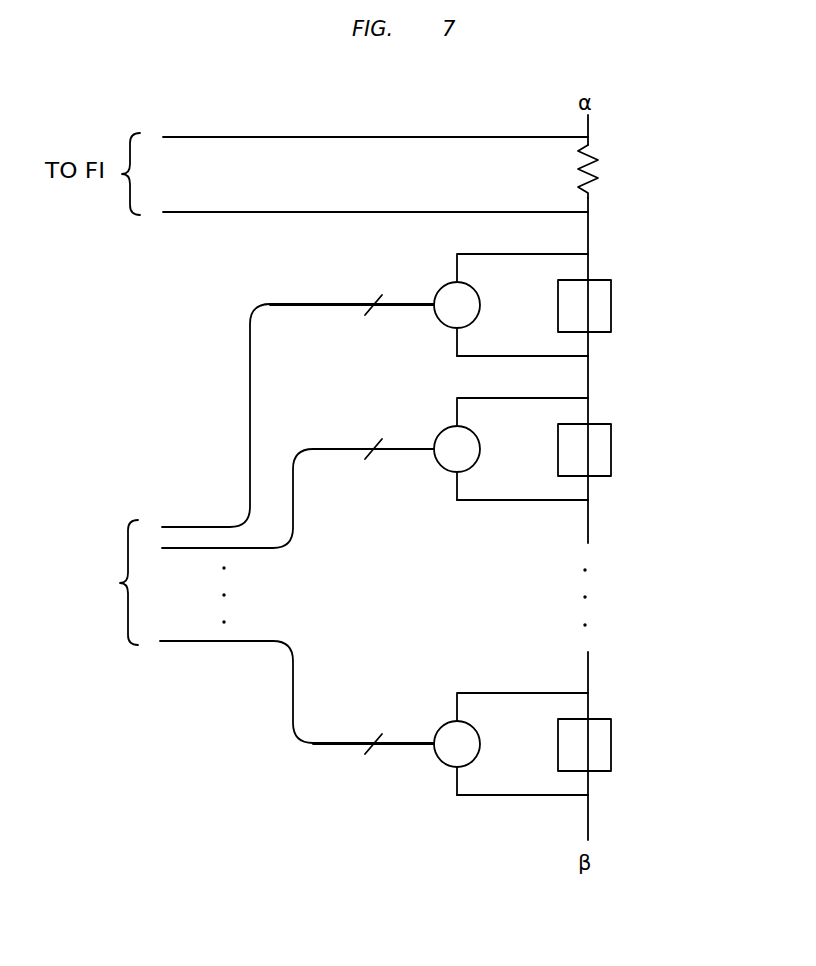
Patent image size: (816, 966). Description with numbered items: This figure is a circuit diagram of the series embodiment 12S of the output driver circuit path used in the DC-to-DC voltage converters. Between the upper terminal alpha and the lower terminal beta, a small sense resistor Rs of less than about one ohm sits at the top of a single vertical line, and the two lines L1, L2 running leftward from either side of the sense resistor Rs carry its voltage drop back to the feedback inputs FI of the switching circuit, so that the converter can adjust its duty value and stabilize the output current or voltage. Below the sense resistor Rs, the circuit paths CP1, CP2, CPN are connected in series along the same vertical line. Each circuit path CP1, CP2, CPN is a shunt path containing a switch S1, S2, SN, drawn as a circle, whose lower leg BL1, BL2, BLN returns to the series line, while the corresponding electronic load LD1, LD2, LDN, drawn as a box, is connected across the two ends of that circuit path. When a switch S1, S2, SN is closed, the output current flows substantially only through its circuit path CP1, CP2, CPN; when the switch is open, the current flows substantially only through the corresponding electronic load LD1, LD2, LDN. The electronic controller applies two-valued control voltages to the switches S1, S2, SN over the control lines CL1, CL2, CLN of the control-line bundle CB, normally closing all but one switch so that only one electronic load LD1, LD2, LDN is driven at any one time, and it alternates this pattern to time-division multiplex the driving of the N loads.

The first line to front end L1 is at (470, 137).
The second line to front end L2 is at (417, 212).
The sense resistor Rs is at (611, 172).
The circuit path CP1 is at (440, 316).
The circuit path CP2 is at (462, 460).
The circuit path CPN is at (462, 755).
The switch S1 is at (442, 325).
The switch S2 is at (442, 469).
The switch SN is at (442, 764).
The electronic load LD1 is at (584, 306).
The electronic load LD2 is at (584, 450).
The electronic load LDN is at (584, 745).
The first bypass line BL1 is at (478, 357).
The second bypass line BL2 is at (478, 501).
The Nth bypass line BLN is at (478, 796).
The control line CL1 is at (250, 408).
The control line CL2 is at (295, 540).
The control line CLN is at (293, 740).
The control-line bundle CB is at (155, 582).
The series embodiment of output driver circuit path 12S is at (652, 558).